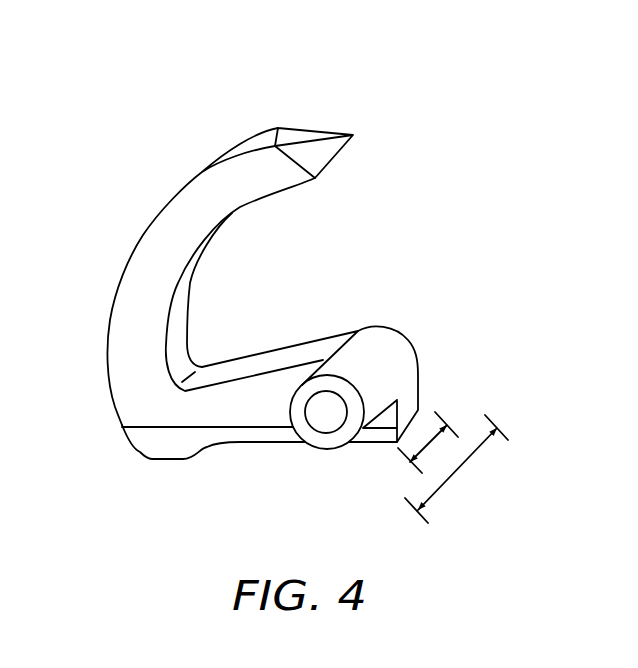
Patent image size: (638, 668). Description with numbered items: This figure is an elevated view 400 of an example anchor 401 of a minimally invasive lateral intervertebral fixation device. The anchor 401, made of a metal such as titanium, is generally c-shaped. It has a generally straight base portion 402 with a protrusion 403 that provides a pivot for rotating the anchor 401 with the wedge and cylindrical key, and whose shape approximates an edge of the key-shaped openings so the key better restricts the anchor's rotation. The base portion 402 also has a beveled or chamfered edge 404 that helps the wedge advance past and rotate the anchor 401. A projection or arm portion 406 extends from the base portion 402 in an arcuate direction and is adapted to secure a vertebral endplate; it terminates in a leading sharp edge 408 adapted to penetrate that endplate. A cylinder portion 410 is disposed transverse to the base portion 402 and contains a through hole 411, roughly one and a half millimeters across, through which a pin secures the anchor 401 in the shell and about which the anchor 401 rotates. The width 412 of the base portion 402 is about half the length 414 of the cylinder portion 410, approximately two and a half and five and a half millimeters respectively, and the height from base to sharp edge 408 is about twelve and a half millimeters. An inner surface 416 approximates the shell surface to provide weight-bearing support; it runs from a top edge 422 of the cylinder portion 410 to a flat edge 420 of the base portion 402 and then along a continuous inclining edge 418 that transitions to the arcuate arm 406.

The elevated view 400 is at (98, 105).
The anchor 401 is at (256, 128).
The base portion 402 is at (232, 445).
The protrusion 403 is at (140, 453).
The beveled or chamfered edge 404 is at (157, 440).
The projection or arm portion 406 is at (158, 248).
The leading pointed or sharp edge 408 is at (322, 147).
The cylinder portion 410 is at (327, 450).
The through hole 411 is at (323, 415).
The width of the base portion 412 is at (420, 453).
The length of the cylinder portion 414 is at (460, 473).
The inner surface 416 is at (355, 225).
The continuous inclining edge 418 is at (202, 367).
The flat edge 420 is at (285, 348).
The top edge 422 is at (375, 327).